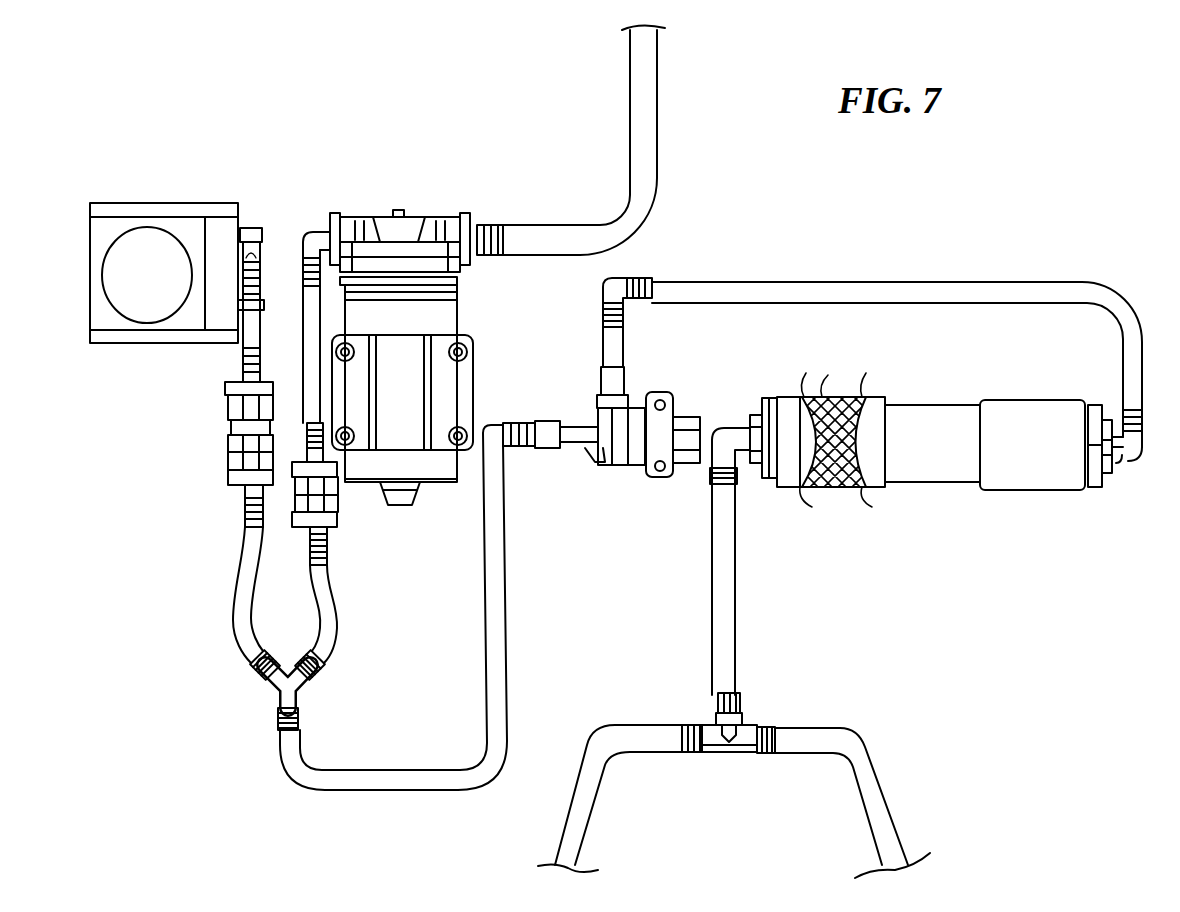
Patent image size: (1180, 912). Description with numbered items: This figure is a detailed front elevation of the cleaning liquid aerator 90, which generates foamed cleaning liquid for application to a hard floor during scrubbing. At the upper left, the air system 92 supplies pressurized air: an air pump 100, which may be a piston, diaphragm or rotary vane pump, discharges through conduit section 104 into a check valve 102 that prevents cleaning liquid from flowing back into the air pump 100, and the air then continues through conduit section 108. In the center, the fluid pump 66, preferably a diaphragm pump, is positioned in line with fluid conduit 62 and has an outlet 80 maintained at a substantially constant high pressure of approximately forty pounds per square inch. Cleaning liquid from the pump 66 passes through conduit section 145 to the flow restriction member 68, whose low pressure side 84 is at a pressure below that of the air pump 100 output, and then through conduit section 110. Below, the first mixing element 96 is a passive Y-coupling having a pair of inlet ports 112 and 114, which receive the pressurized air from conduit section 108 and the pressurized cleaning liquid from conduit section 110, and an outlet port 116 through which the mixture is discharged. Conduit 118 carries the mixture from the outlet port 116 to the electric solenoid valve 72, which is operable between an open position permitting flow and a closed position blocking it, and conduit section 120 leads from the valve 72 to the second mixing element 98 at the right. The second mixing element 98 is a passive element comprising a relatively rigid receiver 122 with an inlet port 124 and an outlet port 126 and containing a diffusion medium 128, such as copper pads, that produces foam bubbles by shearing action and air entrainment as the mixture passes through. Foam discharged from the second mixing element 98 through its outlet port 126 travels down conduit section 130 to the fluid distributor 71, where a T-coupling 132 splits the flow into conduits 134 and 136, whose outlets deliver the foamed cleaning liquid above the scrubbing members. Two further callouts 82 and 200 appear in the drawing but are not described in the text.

The fluid conduit 62 is at (630, 182).
The pump 66 is at (460, 320).
The flow restriction member 68 is at (340, 498).
The fluid distributor 71 is at (797, 667).
The electric solenoid valve 72 is at (655, 392).
The outlet 80 is at (316, 228).
The nipple 82 is at (307, 440).
The low pressure side 84 is at (327, 545).
The cleaning liquid aerator 90 is at (272, 58).
The air system 92 is at (137, 175).
The first fluid mixing member 96 is at (297, 690).
The second fluid mixing member 98 is at (933, 368).
The air pump 100 is at (172, 205).
The check valve 102 is at (225, 406).
The fluid conduit section 104 is at (238, 364).
The conduit section 108 is at (240, 532).
The conduit section 110 is at (328, 593).
The inlet port 112 is at (262, 673).
The inlet port 114 is at (321, 668).
The outlet port 116 is at (299, 724).
The conduit 118 is at (355, 770).
The conduit section 120 is at (722, 280).
The receiver 122 is at (997, 398).
The inlet port 124 is at (1128, 446).
The outlet port 126 is at (734, 428).
The diffusion medium 128 is at (820, 398).
The conduit section 130 is at (740, 552).
The T-coupling 132 is at (742, 716).
The conduit 134 is at (617, 724).
The conduit 136 is at (836, 728).
The conduit section 145 is at (301, 318).
The pump assembly 200 is at (425, 182).